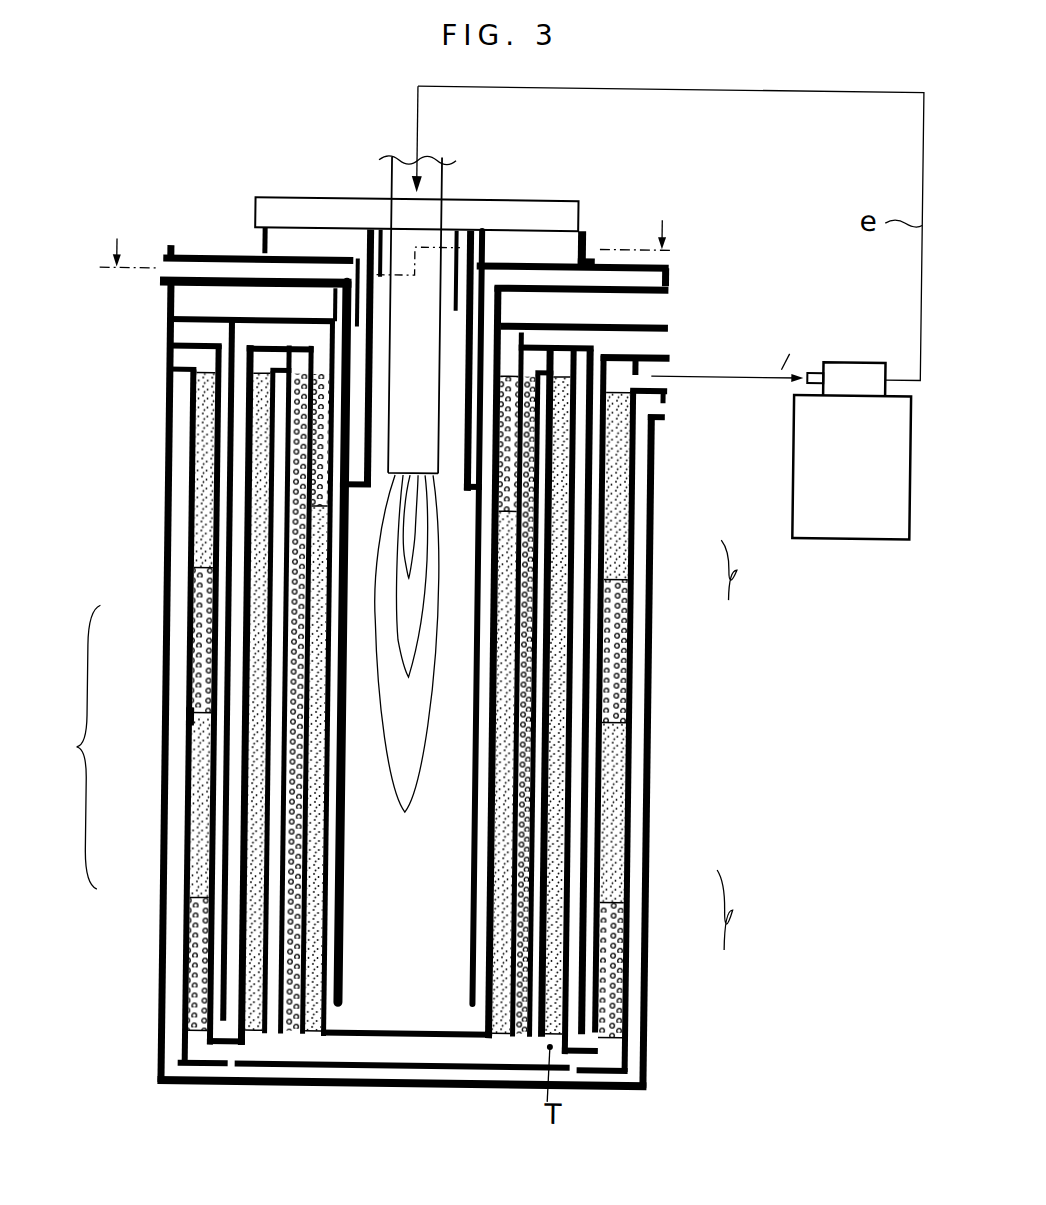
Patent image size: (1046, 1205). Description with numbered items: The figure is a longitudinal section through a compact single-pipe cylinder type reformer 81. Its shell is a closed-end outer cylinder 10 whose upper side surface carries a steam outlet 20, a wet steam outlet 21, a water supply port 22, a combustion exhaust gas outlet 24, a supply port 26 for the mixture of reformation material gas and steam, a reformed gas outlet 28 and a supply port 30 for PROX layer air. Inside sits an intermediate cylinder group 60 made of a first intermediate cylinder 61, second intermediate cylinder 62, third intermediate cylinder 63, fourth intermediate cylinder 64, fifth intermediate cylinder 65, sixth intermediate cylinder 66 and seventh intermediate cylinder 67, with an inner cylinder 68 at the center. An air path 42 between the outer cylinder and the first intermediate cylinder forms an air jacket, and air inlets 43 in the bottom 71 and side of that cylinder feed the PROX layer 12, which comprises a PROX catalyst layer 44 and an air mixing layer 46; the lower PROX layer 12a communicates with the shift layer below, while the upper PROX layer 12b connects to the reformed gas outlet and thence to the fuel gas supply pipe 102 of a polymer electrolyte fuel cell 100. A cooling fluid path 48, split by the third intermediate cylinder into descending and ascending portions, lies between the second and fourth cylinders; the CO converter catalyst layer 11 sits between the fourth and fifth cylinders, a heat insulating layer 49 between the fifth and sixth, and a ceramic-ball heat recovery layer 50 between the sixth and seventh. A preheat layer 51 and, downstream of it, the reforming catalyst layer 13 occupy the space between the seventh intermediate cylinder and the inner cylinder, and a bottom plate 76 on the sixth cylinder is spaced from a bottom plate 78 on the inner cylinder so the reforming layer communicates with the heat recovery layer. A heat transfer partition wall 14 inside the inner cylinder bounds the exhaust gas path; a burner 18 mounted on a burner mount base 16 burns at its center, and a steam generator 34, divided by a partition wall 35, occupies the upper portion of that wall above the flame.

The outer cylinder 10 is at (165, 494).
The CO converter catalyst layer 11 is at (572, 625).
The CO selective oxidizing catalyst layer 12 is at (188, 549).
The lower PROX layer 12a is at (747, 910).
The upper PROX layer 12b is at (750, 570).
The reforming catalyst layer 13 is at (502, 1041).
The heat transfer partition wall 14 is at (350, 1005).
The burner mount base 16 is at (548, 199).
The burner 18 is at (428, 183).
The steam outlet 20 is at (580, 250).
The wet steam outlet 21 is at (157, 265).
The water supply port 22 is at (667, 276).
The combustion exhaust gas outlet 24 is at (650, 306).
The supply port for fluid mixture 26 is at (650, 342).
The reformed gas outlet 28 is at (662, 376).
The supply port for PROX layer air 30 is at (657, 396).
The steam generator 34 is at (357, 417).
The partition wall 35 is at (375, 245).
The air path 42 is at (652, 436).
The air inlets 43 is at (625, 702).
The PROX catalyst layer 44 is at (628, 552).
The air mixing layer 46 is at (605, 587).
The cooling fluid path 48 is at (547, 660).
The heat insulating layer 49 is at (556, 757).
The heat recovery layer 50 is at (527, 802).
The preheat layer 51 is at (512, 497).
The intermediate cylinder group 60 is at (69, 746).
The first intermediate cylinder 61 is at (200, 632).
The second intermediate cylinder 62 is at (215, 671).
The third intermediate cylinder 63 is at (184, 714).
The fourth intermediate cylinder 64 is at (248, 746).
The fifth intermediate cylinder 65 is at (290, 787).
The sixth intermediate cylinder 66 is at (283, 820).
The seventh intermediate cylinder 67 is at (292, 863).
The inner cylinder 68 is at (285, 897).
The bottom 71 is at (298, 1073).
The bottom plate 76 is at (515, 1051).
The bottom plate 78 is at (425, 1038).
The reformer 81 is at (684, 241).
The polymer electrolyte fuel cell 100 is at (836, 540).
The fuel gas supply pipe 102 is at (814, 364).